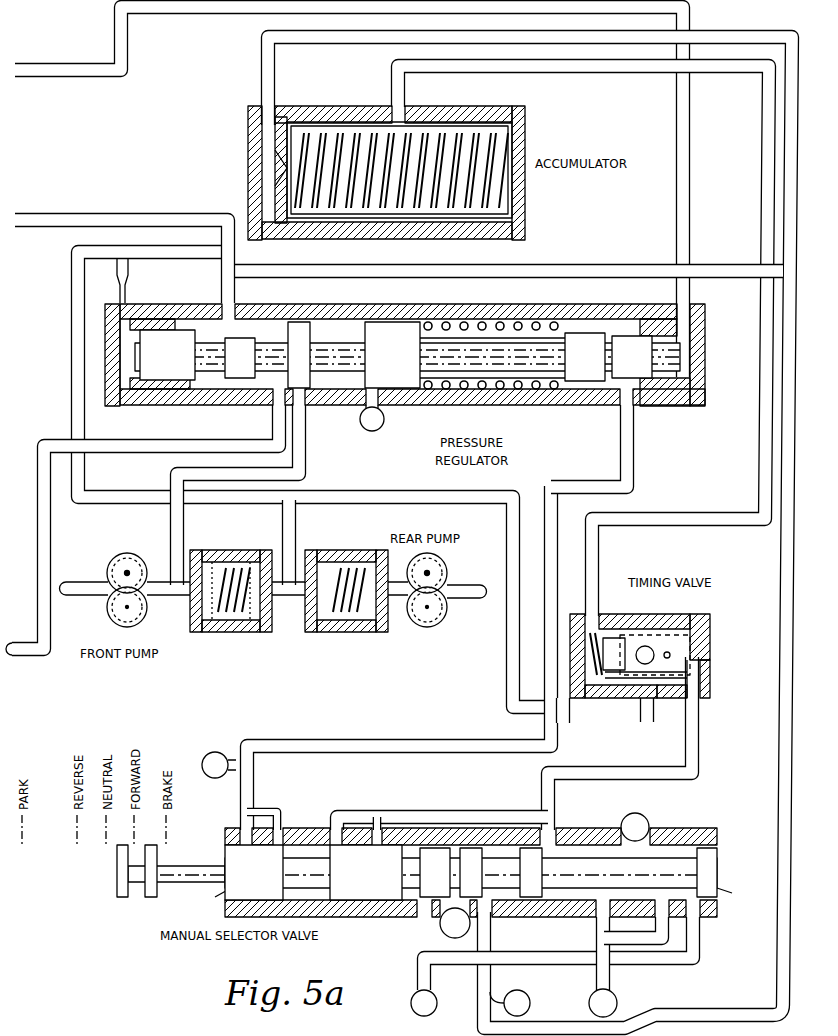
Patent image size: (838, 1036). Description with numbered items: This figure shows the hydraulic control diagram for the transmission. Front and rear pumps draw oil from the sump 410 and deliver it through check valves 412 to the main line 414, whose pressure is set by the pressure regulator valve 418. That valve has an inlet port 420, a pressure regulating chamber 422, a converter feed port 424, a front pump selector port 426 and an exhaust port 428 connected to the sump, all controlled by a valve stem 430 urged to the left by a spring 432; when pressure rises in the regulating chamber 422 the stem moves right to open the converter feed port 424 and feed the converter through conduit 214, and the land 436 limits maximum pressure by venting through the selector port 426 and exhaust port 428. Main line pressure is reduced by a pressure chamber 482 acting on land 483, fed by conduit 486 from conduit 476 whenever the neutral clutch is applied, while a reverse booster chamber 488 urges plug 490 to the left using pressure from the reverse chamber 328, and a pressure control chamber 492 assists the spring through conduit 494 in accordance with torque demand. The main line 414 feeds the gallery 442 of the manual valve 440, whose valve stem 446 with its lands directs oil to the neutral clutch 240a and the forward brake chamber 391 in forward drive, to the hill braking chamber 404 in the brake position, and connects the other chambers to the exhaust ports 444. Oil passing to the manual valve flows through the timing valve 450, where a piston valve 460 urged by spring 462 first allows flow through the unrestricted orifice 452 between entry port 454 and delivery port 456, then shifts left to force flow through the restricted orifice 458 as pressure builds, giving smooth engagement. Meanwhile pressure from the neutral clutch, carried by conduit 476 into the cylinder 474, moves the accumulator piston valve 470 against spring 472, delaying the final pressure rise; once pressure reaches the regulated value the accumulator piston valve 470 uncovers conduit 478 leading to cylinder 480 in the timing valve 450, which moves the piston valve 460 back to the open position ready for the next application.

The conduit 494 is at (195, 10).
The accumulator piston valve 470 is at (316, 125).
The conduit 478 is at (408, 97).
The spring 472 is at (500, 135).
The cylinder 474 is at (265, 150).
The conduit 486 is at (615, 275).
The land 483 is at (214, 326).
The inlet port 420 is at (246, 308).
The land 436 is at (328, 325).
The spring 432 is at (495, 322).
The plug 490 is at (600, 330).
The pressure control chamber 492 is at (690, 345).
The pressure regulating chamber 422 is at (125, 365).
The pressure chamber 482 is at (182, 396).
The valve stem 430 is at (250, 385).
The converter feed port 424 is at (272, 395).
The front pump selector port 426 is at (308, 410).
The exhaust port 428 is at (385, 425).
The reverse booster chamber 488 is at (625, 405).
The pressure regulator valve 418 is at (678, 418).
The main line 414 is at (460, 500).
The conduit 476 is at (781, 550).
The cylinder 480 is at (598, 615).
The unrestricted orifice 452 is at (648, 645).
The restricted orifice 458 is at (700, 627).
The timing valve 450 is at (712, 662).
The delivery port 456 is at (707, 688).
The sump 410 is at (82, 598).
The check valves 412 is at (275, 628).
The manual valve 440 is at (472, 600).
The conduit 214 is at (30, 656).
The spring 462 is at (595, 645).
The entry port 454 is at (640, 700).
The piston valve 460 is at (662, 700).
The reverse chamber 328 is at (215, 752).
The valve stem 446 is at (372, 850).
The gallery 442 is at (428, 815).
The exhaust ports 444 is at (230, 850).
The low ratio or hill braking chamber 404 is at (411, 1001).
The neutral clutch 240a is at (530, 997).
The forward brake chamber 391 is at (615, 1000).